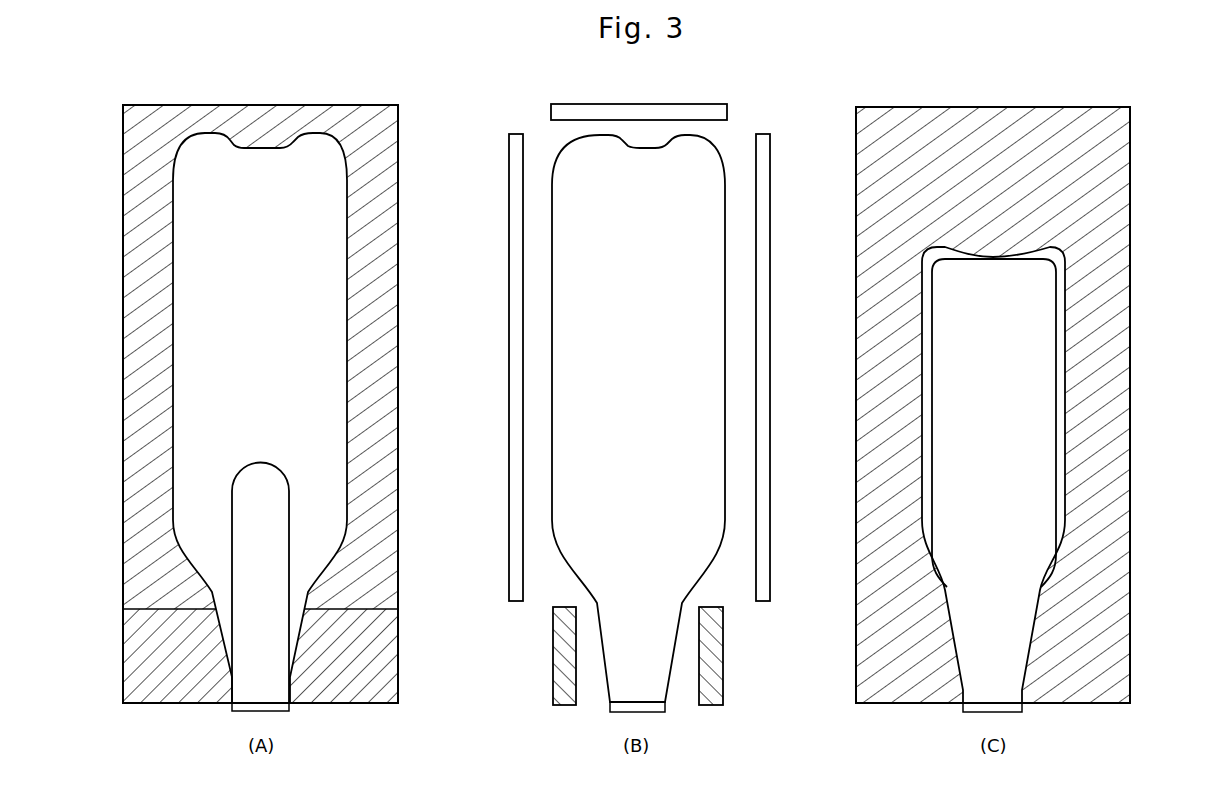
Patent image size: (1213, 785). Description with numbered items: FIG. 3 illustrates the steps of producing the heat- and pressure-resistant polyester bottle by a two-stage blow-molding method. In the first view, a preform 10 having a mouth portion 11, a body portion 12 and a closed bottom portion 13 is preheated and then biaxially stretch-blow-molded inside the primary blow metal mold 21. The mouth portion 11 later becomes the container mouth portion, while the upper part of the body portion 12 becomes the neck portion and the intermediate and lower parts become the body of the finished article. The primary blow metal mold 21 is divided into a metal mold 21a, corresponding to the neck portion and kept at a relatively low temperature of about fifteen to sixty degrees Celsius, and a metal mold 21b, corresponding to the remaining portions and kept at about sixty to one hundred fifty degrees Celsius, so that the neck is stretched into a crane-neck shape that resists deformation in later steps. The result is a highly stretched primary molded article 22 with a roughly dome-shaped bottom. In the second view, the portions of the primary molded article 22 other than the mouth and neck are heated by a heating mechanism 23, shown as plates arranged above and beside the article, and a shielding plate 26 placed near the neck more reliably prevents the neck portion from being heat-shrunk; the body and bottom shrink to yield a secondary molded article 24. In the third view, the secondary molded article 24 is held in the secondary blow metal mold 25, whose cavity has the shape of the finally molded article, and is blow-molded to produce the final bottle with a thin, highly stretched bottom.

The preform 10 is at (216, 578).
The mouth portion 11 is at (289, 711).
The body portion 12 is at (232, 542).
The closed bottom portion 13 is at (257, 463).
The primary blow metal mold 21 is at (289, 404).
The metal mold of the portion corresponding to the neck portion 21a is at (392, 672).
The metal mold corresponding to the portions excluding the neck portion 21b is at (392, 556).
The primary molded article 22 is at (713, 148).
The heating mechanism 23 is at (714, 104).
The secondary molded article 24 is at (1058, 330).
The secondary blow metal mold 25 is at (1122, 462).
The shielding plate 26 is at (722, 650).